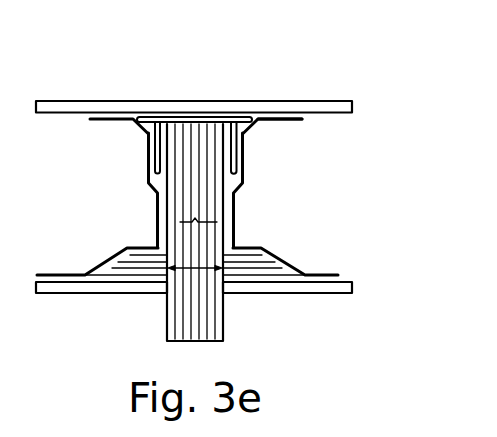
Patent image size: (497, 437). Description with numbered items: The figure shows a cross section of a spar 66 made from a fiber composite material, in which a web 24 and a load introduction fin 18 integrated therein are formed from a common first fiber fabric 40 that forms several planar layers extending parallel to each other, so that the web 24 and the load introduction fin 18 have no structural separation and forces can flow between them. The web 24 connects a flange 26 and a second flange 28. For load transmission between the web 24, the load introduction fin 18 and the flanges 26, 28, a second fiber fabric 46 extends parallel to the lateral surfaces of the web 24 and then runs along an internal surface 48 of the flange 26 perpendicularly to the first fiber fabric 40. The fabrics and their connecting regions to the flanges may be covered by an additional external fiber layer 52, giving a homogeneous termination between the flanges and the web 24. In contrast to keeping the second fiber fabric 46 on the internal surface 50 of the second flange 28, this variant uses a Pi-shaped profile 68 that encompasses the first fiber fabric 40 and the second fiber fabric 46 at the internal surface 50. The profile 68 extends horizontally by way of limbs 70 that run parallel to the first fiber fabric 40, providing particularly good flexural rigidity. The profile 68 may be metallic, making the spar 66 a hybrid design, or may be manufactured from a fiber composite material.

The load introduction fin 18 is at (236, 320).
The web 24 is at (284, 190).
The flange 26 is at (352, 287).
The second flange 28 is at (352, 107).
The first fiber fabric 40 is at (195, 244).
The second fiber fabric 46 is at (218, 221).
The internal surface 48 is at (350, 272).
The internal surface 50 is at (340, 124).
The external fiber layer 52 is at (244, 155).
The spar 66 is at (246, 91).
The Pi-shaped profile 68 is at (156, 105).
The limbs 70 is at (154, 162).